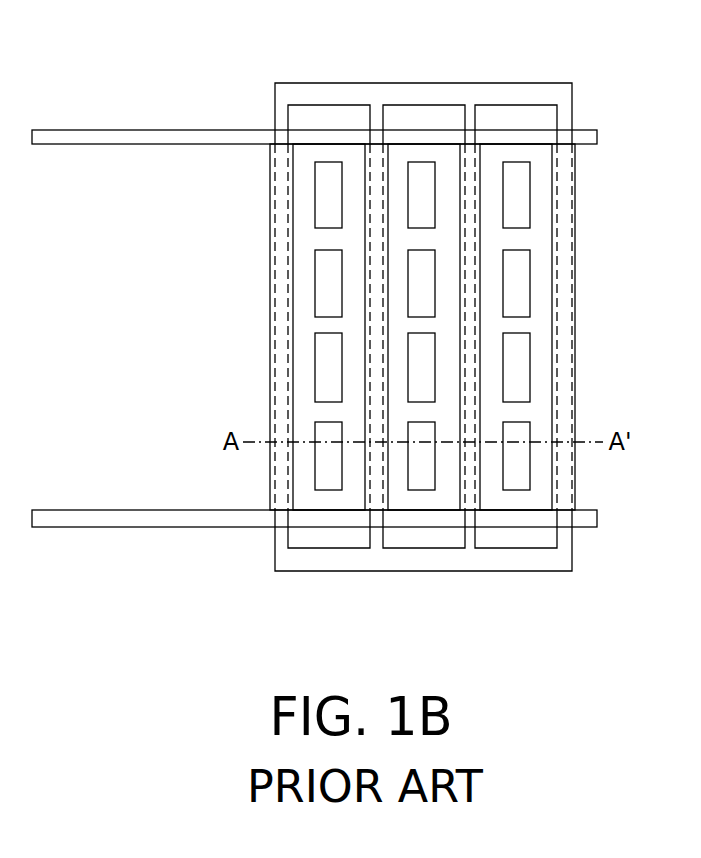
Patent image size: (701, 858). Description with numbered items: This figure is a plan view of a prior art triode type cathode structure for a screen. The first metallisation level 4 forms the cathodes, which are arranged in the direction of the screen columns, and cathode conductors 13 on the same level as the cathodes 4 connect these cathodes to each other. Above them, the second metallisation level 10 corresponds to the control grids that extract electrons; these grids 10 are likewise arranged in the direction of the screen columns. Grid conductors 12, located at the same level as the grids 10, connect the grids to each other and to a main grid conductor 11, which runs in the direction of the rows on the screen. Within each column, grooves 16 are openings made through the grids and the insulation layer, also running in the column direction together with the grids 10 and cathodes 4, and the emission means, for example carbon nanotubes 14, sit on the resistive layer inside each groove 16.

The first metallisation level 4 is at (467, 252).
The second metallisation level 10 is at (370, 240).
The main grid conductor 11 is at (92, 144).
The grid conductors 12 is at (532, 133).
The cathode conductors 13 is at (433, 92).
The carbon nanotubes 14 is at (517, 377).
The groove 16 is at (303, 182).